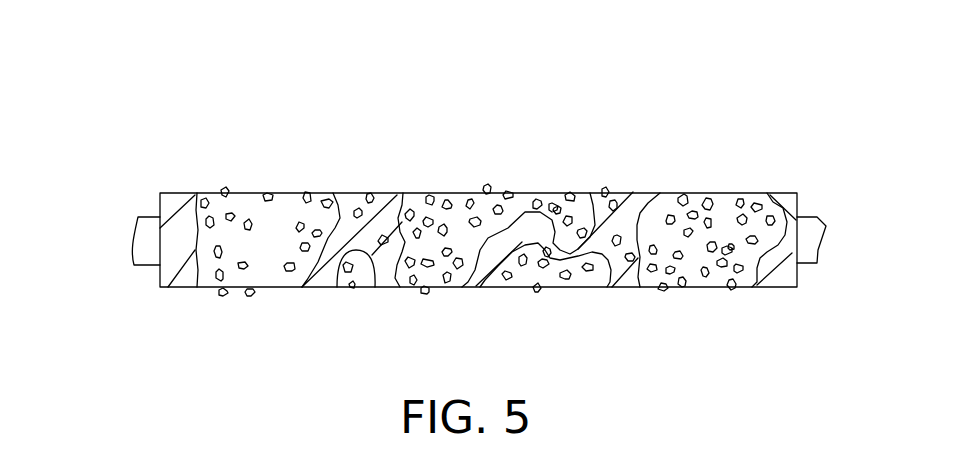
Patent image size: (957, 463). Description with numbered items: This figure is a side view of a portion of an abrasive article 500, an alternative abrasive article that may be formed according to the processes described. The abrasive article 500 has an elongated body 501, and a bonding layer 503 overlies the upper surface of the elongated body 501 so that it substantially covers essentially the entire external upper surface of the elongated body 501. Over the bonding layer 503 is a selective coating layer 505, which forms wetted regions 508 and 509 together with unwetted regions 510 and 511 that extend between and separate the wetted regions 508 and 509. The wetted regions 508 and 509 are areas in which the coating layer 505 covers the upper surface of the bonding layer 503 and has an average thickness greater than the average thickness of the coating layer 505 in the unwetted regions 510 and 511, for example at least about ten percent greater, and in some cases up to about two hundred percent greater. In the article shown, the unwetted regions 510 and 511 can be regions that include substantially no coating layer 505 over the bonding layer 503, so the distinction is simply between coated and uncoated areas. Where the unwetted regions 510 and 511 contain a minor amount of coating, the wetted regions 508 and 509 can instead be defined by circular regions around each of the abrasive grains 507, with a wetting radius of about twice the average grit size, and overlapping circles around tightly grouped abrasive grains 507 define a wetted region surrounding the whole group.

The abrasive article 500 is at (479, 155).
The elongated body 501 is at (152, 228).
The bonding layer 503 is at (174, 193).
The selective coating layer 505 is at (358, 290).
The abrasive grains 507 is at (308, 193).
The wetted region 508 is at (318, 187).
The wetted region 509 is at (474, 187).
The unwetted region 510 is at (383, 187).
The unwetted region 511 is at (636, 185).